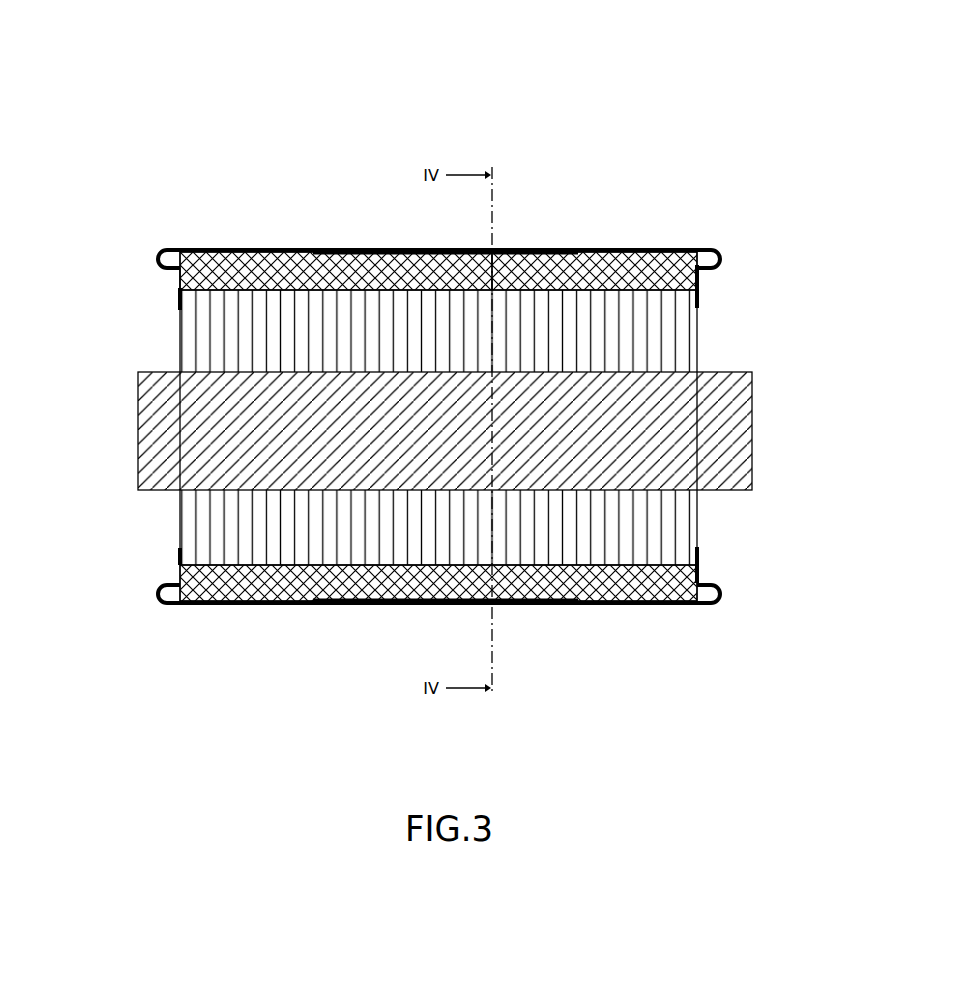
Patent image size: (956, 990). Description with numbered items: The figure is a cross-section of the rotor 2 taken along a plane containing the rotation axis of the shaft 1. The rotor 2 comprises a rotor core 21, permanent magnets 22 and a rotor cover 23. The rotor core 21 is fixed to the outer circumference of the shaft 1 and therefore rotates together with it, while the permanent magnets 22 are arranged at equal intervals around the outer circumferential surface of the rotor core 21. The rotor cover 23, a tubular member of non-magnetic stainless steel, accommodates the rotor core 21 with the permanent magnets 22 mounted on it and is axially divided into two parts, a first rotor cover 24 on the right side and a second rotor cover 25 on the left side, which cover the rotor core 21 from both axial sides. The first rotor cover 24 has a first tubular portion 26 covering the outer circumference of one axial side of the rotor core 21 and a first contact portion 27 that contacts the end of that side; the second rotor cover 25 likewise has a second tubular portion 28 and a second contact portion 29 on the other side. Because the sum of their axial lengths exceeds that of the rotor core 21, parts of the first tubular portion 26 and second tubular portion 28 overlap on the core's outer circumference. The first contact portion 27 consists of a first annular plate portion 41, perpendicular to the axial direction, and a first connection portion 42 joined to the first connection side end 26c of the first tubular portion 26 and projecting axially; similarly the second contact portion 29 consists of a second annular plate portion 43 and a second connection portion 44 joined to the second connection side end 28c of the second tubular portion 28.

The shaft 1 is at (160, 440).
The rotor 2 is at (533, 120).
The rotor core 21 is at (306, 547).
The permanent magnets 22 is at (264, 593).
The rotor cover 23 is at (222, 606).
The first rotor cover 24 is at (651, 205).
The second rotor cover 25 is at (230, 205).
The first tubular portion 26 is at (600, 247).
The first connection side end 26c is at (688, 247).
The first contact portion 27 is at (700, 282).
The second tubular portion 28 is at (281, 247).
The second connection side end 28c is at (177, 247).
The second contact portion 29 is at (179, 282).
The first annular plate portion 41 is at (700, 300).
The first connection portion 42 is at (722, 258).
The second annular plate portion 43 is at (179, 300).
The second connection portion 44 is at (157, 258).